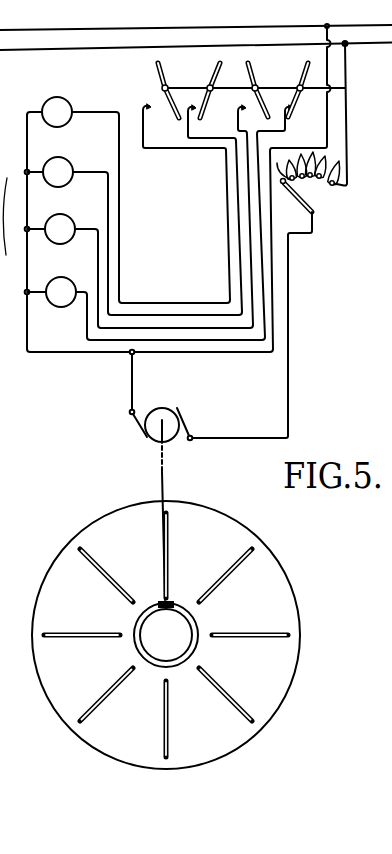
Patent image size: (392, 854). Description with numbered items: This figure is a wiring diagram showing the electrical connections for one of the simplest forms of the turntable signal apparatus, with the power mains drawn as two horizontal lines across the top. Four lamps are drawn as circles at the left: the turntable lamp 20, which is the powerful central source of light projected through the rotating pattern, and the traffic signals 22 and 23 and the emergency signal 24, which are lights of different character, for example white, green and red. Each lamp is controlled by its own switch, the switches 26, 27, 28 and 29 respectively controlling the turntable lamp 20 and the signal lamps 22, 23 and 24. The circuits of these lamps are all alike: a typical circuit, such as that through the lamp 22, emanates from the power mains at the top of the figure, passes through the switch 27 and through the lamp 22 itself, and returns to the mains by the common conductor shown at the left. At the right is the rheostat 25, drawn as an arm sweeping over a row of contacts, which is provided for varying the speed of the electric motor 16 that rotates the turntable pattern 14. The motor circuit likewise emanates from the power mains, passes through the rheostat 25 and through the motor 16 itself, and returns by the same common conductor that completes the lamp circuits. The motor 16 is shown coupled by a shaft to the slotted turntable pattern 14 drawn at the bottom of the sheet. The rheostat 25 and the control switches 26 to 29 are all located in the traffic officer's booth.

The turntable pattern 14 is at (220, 517).
The electric motor 16 is at (161, 475).
The source of light 20 is at (76, 283).
The traffic signal 22 is at (72, 222).
The traffic signal 23 is at (71, 166).
The emergency signal 24 is at (71, 106).
The rheostat 25 is at (272, 295).
The switch 26 is at (309, 72).
The switch 27 is at (257, 70).
The switch 28 is at (213, 97).
The switch 29 is at (167, 73).